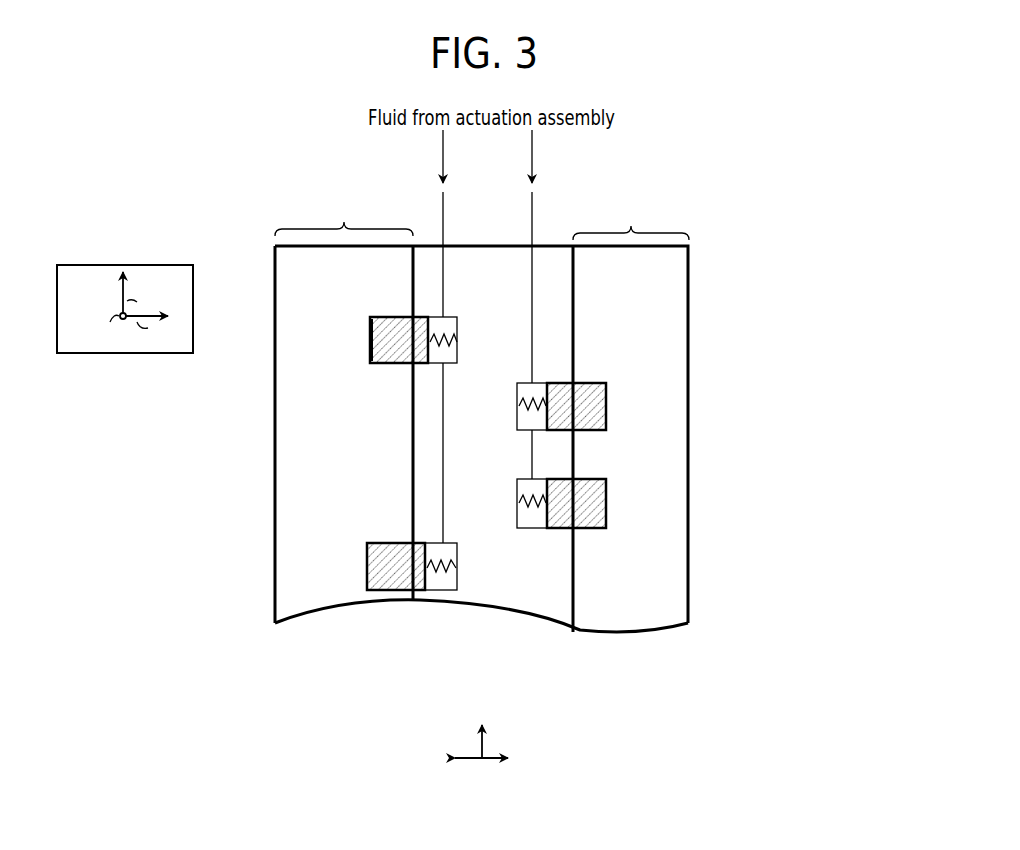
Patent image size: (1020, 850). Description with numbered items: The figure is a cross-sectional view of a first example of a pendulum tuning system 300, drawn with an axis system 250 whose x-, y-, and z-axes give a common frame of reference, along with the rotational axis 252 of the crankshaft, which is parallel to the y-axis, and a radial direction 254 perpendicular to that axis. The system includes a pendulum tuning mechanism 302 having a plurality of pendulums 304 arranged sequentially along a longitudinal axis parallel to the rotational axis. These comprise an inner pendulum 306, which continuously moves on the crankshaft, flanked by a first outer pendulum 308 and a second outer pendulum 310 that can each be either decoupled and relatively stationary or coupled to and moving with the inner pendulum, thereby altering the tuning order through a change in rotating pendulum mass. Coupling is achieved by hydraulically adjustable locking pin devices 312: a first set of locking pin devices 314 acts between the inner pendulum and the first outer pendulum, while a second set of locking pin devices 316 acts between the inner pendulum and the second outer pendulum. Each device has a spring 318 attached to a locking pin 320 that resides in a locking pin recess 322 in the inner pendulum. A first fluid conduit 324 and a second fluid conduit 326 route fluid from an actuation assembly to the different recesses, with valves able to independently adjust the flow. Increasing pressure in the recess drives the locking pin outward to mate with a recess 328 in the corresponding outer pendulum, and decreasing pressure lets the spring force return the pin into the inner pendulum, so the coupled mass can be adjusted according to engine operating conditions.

The axis system 250 is at (120, 265).
The rotational axis 252 is at (472, 759).
The radial direction 254 is at (483, 744).
The pendulum tuning system 300 is at (785, 195).
The pendulum tuning mechanism 302 is at (748, 262).
The pendulums 304 is at (667, 184).
The inner pendulum 306 is at (486, 232).
The first outer pendulum 308 is at (344, 214).
The second outer pendulum 310 is at (631, 216).
The hydraulically adjustable locking pin devices 312 is at (620, 544).
The first set of locking pin devices 314 is at (406, 435).
The second set of locking pin devices 316 is at (620, 393).
The spring 318 is at (446, 344).
The locking pin 320 is at (385, 364).
The locking pin recess 322 is at (453, 322).
The first fluid conduit 324 is at (445, 273).
The second fluid conduit 326 is at (531, 330).
The recess 328 is at (364, 324).